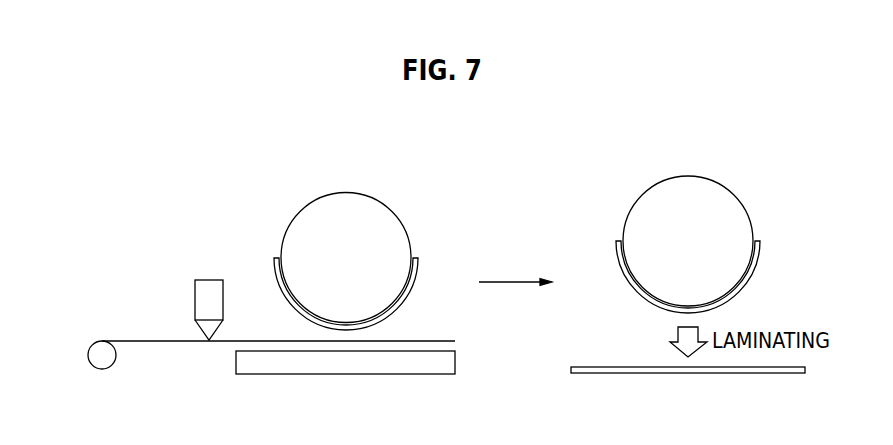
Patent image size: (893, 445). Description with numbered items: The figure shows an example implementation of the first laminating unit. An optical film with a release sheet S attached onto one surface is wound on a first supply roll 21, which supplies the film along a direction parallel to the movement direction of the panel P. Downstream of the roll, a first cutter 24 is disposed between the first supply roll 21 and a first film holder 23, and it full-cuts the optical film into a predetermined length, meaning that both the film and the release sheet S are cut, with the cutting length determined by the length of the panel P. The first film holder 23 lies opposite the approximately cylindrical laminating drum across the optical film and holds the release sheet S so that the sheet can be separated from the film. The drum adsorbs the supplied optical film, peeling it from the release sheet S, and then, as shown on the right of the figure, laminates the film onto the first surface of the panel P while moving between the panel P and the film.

The first supply roll 21 is at (88, 356).
The first film holder 23 is at (427, 375).
The first cutter 24 is at (212, 279).
The release sheet S is at (322, 341).
The panel P is at (806, 370).